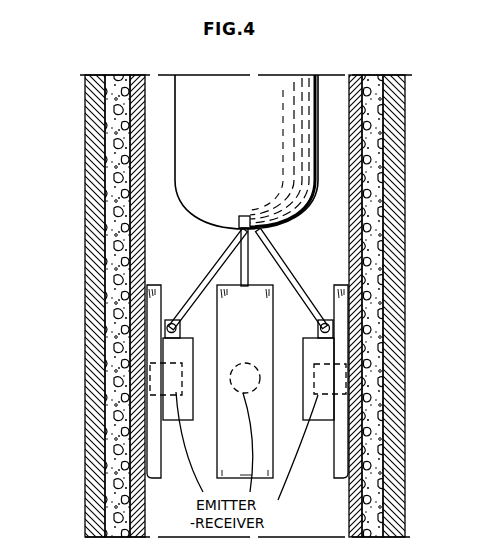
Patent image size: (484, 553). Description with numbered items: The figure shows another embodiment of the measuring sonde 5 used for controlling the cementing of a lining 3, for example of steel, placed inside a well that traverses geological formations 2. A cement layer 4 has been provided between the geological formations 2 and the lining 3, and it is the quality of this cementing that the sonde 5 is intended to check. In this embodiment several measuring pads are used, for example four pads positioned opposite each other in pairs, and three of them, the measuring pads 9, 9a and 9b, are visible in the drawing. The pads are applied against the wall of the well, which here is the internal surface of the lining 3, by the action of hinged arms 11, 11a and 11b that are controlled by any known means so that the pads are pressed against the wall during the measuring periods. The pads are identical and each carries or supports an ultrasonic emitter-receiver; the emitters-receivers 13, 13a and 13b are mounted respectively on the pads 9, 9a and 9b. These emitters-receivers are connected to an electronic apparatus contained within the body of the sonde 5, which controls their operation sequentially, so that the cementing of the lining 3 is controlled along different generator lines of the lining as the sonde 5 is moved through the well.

The geological formations 2 is at (393, 77).
The lining 3 is at (350, 76).
The cement layer 4 is at (368, 78).
The sonde 5 is at (175, 140).
The measuring pad 9 is at (150, 447).
The measuring pad 9a is at (230, 468).
The measuring pad 9b is at (345, 423).
The hinged arms 11 is at (241, 242).
The hinged arm 11a is at (242, 260).
The hinged arm 11b is at (310, 300).
The ultrasonic emitter-receiver 13 is at (180, 364).
The emitter-receiver 13a is at (237, 382).
The emitter-receiver 13b is at (340, 383).